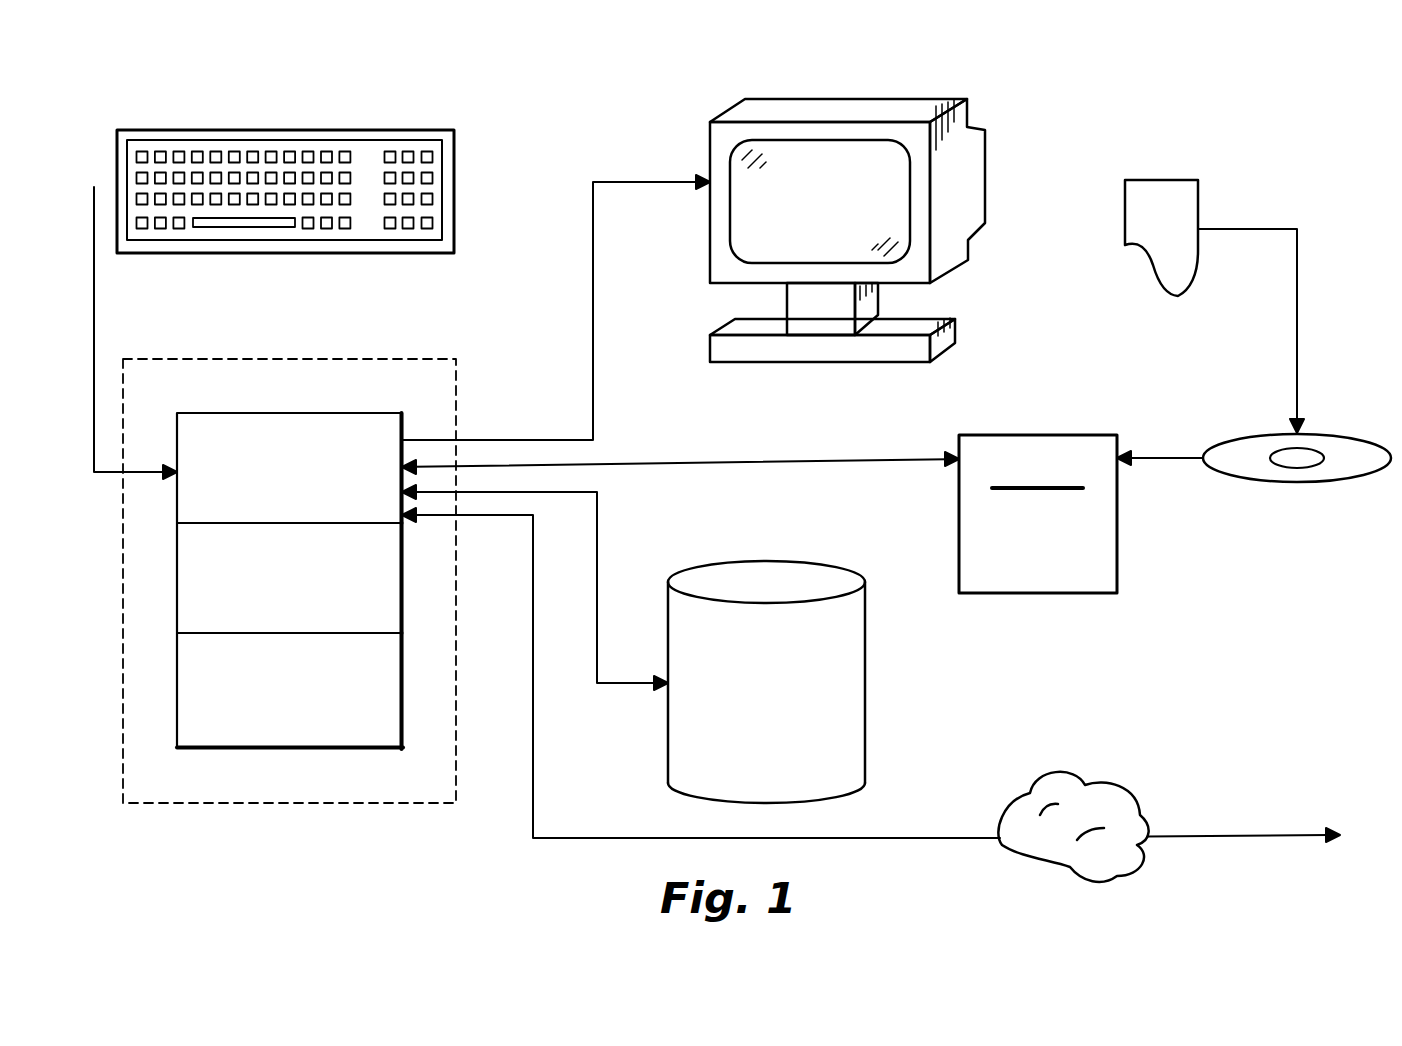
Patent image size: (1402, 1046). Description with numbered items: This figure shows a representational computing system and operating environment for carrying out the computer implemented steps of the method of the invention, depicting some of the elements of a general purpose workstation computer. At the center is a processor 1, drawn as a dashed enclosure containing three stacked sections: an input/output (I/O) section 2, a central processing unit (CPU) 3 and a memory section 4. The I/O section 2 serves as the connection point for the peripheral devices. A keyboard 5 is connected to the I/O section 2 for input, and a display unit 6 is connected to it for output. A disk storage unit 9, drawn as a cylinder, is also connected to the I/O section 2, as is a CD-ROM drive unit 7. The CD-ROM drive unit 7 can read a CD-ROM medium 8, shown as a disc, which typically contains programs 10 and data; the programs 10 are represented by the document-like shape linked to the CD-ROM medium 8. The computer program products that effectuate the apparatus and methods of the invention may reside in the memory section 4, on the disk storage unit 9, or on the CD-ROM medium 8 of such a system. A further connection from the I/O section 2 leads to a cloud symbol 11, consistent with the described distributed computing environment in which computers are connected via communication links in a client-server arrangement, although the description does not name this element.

The processor 1 is at (402, 355).
The input/output (I/O) section 2 is at (265, 418).
The central processing unit (CPU) 3 is at (403, 592).
The memory section 4 is at (403, 728).
The keyboard 5 is at (432, 130).
The display unit 6 is at (913, 107).
The CD-ROM drive unit 7 is at (988, 435).
The CD-ROM medium 8 is at (1272, 440).
The disk storage unit 9 is at (865, 655).
The programs 10 is at (1140, 187).
The network 11 is at (1078, 778).